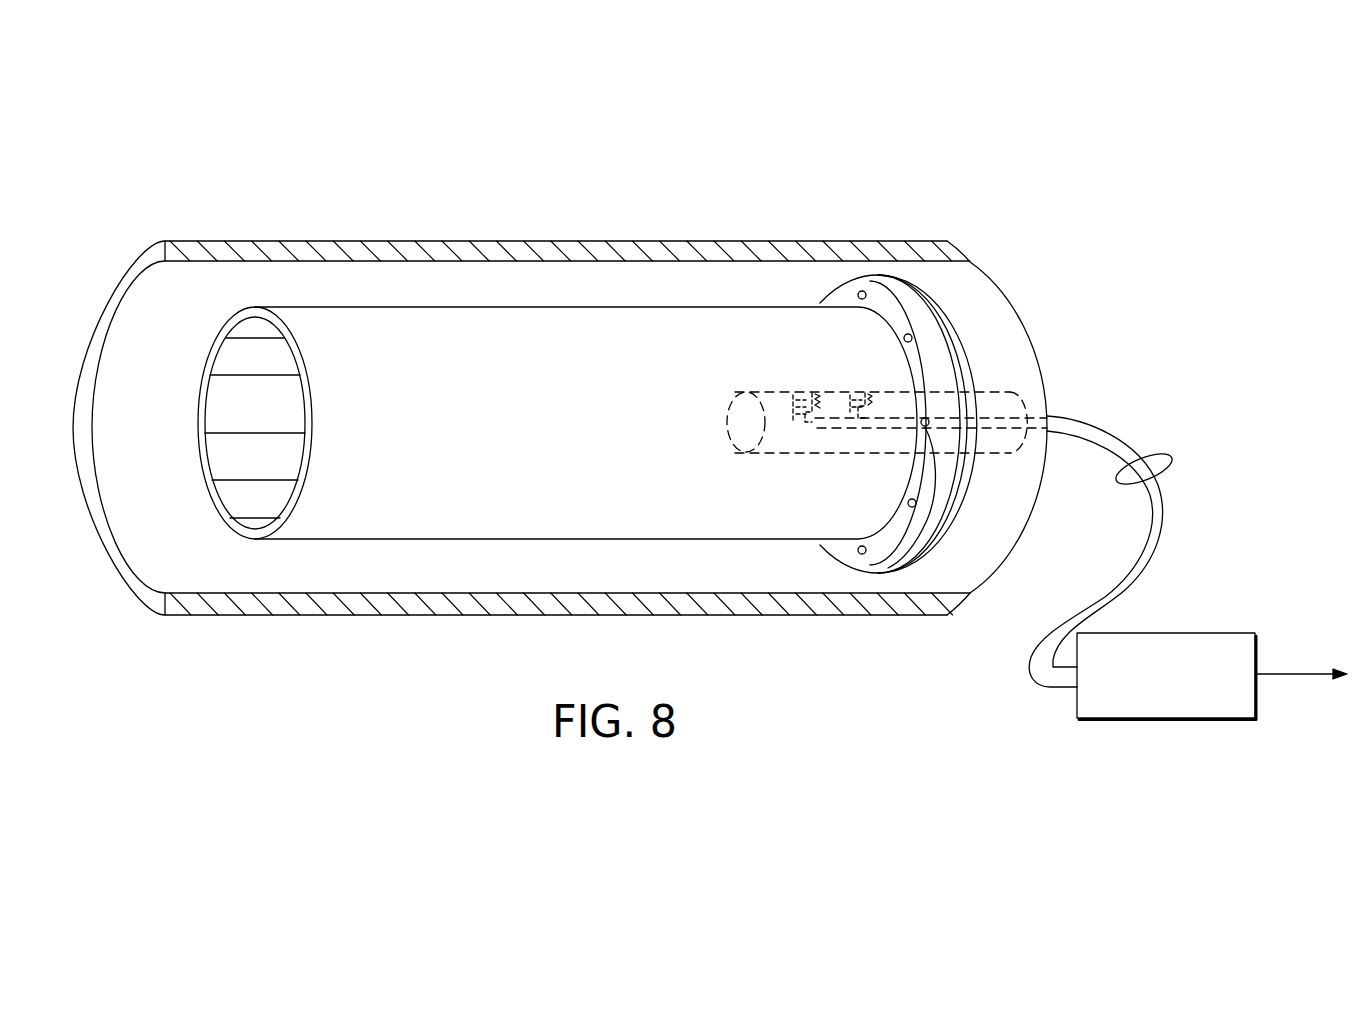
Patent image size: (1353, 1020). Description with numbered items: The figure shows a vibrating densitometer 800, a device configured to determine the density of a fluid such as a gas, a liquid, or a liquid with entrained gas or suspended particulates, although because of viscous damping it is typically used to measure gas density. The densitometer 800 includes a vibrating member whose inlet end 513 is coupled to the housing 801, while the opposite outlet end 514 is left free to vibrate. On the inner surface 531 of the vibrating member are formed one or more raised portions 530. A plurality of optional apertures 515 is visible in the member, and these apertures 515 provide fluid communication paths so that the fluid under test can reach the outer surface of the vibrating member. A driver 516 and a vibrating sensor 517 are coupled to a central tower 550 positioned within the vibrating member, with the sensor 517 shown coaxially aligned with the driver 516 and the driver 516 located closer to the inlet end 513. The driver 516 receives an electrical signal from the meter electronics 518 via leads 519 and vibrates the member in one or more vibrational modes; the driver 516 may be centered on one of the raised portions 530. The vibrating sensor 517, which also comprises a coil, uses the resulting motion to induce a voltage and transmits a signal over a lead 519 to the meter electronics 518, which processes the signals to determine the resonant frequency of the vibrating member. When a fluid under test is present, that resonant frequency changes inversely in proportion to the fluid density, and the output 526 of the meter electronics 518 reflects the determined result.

The vibrating densitometer 800 is at (958, 116).
The housing 801 is at (628, 241).
The inlet end 513 is at (1056, 288).
The outlet end 514 is at (194, 342).
The apertures 515 is at (862, 291).
The driver 516 is at (862, 392).
The vibrating sensor 517 is at (805, 392).
The meter electronics 518 is at (1092, 718).
The leads 519 is at (1168, 455).
The output signal 526 is at (1312, 670).
The raised portions 530 is at (222, 400).
The inner surface 531 is at (240, 462).
The central tower 550 is at (788, 453).